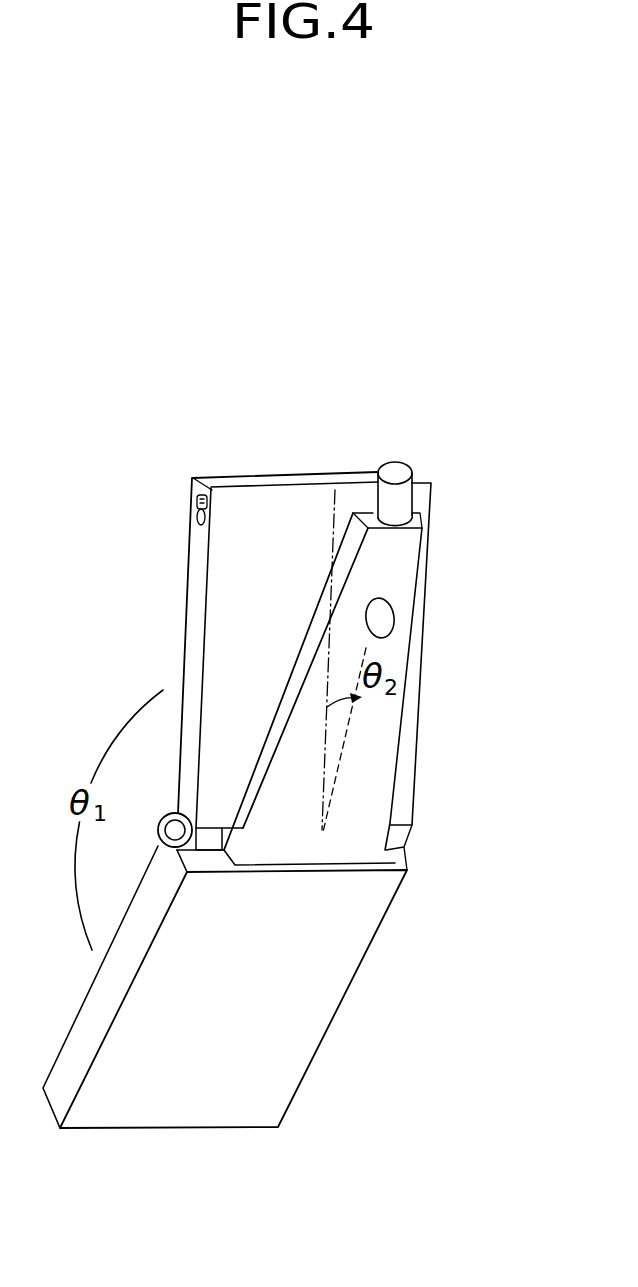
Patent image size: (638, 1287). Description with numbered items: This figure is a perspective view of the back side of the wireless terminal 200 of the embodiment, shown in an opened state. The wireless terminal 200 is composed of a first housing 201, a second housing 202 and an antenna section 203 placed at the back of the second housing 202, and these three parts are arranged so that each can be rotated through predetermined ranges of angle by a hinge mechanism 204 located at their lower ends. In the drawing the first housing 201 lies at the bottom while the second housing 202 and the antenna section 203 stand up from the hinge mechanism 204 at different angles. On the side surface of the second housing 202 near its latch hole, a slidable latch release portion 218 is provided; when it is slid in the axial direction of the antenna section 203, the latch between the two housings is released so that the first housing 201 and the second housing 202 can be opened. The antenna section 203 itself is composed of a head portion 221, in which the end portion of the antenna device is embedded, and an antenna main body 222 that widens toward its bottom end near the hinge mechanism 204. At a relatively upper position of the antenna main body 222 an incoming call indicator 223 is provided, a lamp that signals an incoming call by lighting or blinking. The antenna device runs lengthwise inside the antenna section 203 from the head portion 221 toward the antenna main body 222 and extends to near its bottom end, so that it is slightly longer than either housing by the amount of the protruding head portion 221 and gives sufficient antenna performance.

The wireless terminal 200 is at (456, 918).
The first housing 201 is at (318, 1022).
The second housing 202 is at (214, 631).
The antenna section 203 is at (382, 752).
The hinge mechanism 204 is at (206, 827).
The slidable latch release portion 218 is at (197, 503).
The head portion 221 is at (410, 466).
The antenna main body 222 is at (404, 637).
The incoming call indicator 223 is at (380, 598).